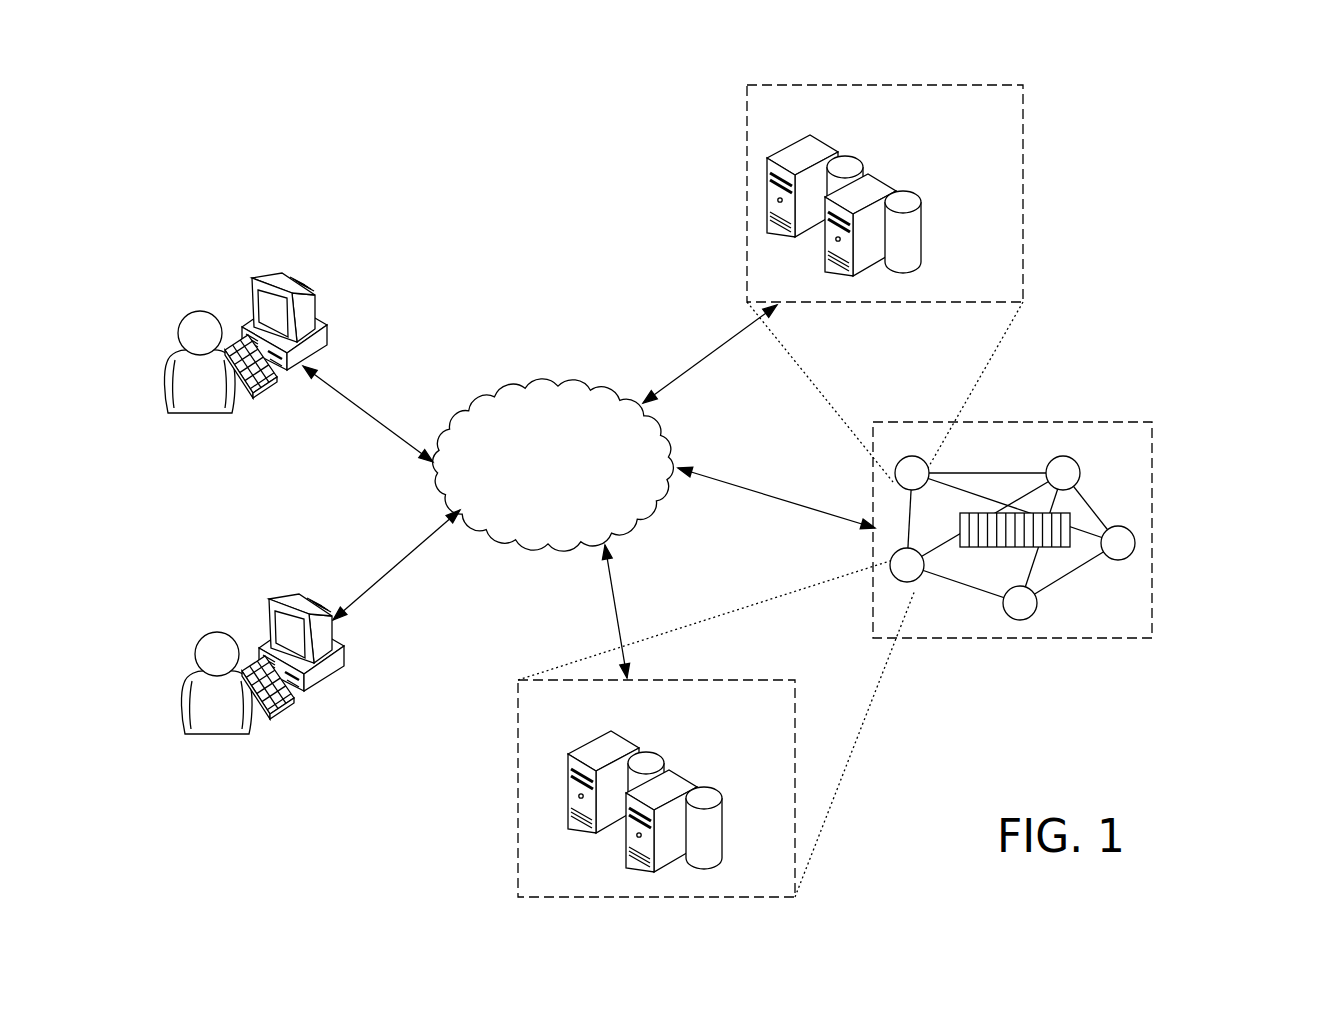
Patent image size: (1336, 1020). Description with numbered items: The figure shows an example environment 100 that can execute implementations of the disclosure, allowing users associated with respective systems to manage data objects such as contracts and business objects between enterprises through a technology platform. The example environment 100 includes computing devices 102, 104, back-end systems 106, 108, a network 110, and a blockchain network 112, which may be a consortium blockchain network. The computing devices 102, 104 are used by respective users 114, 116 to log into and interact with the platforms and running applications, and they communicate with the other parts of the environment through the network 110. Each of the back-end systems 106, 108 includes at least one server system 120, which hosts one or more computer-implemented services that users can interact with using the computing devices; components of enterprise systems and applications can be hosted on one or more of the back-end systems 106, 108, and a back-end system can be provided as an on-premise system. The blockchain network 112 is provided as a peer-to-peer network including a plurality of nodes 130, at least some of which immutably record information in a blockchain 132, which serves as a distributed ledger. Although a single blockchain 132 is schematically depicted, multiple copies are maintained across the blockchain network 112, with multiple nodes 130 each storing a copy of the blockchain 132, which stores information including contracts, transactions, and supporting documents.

The example environment 100 is at (500, 125).
The computing device 102 is at (258, 276).
The computing device 104 is at (272, 598).
The back-end system 106 is at (1024, 192).
The back-end system 108 is at (518, 790).
The network 110 is at (556, 386).
The blockchain network 112 is at (1034, 422).
The user 114 is at (198, 414).
The user 116 is at (216, 736).
The server system 120 is at (866, 166).
The node 130 is at (1076, 460).
The blockchain 132 is at (1071, 522).